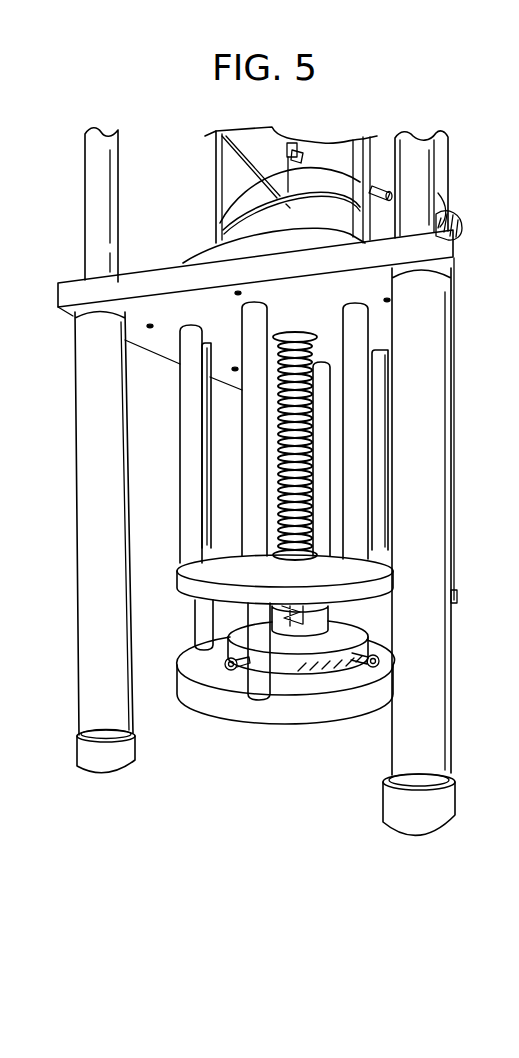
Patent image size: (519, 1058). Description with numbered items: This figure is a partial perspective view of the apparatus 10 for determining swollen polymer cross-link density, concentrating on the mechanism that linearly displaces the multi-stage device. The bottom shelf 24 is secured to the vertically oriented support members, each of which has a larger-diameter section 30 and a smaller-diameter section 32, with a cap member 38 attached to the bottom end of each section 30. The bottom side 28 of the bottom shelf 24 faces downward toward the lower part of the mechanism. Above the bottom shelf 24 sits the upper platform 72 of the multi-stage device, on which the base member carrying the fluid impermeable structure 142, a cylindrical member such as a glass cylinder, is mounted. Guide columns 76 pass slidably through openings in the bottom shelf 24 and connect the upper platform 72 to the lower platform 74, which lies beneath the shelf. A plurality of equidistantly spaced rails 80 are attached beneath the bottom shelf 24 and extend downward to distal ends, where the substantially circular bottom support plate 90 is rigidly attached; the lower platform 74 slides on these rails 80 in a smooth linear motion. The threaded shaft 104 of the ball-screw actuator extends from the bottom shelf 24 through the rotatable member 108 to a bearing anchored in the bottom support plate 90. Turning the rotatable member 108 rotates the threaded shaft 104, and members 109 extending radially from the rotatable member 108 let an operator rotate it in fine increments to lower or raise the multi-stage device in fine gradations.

The apparatus 10 is at (376, 116).
The bottom shelf 24 is at (446, 246).
The bottom side 28 is at (150, 340).
The section 30 is at (82, 562).
The section 32 is at (116, 191).
The cap member 38 is at (107, 773).
The upper platform 72 is at (203, 258).
The lower platform 74 is at (195, 582).
The guide columns 76 is at (188, 468).
The rails 80 is at (207, 478).
The bottom support plate 90 is at (310, 727).
The threaded shaft 104 is at (283, 398).
The rotatable member 108 is at (297, 667).
The members 109 is at (230, 670).
The fluid impermeable structure 142 is at (215, 163).